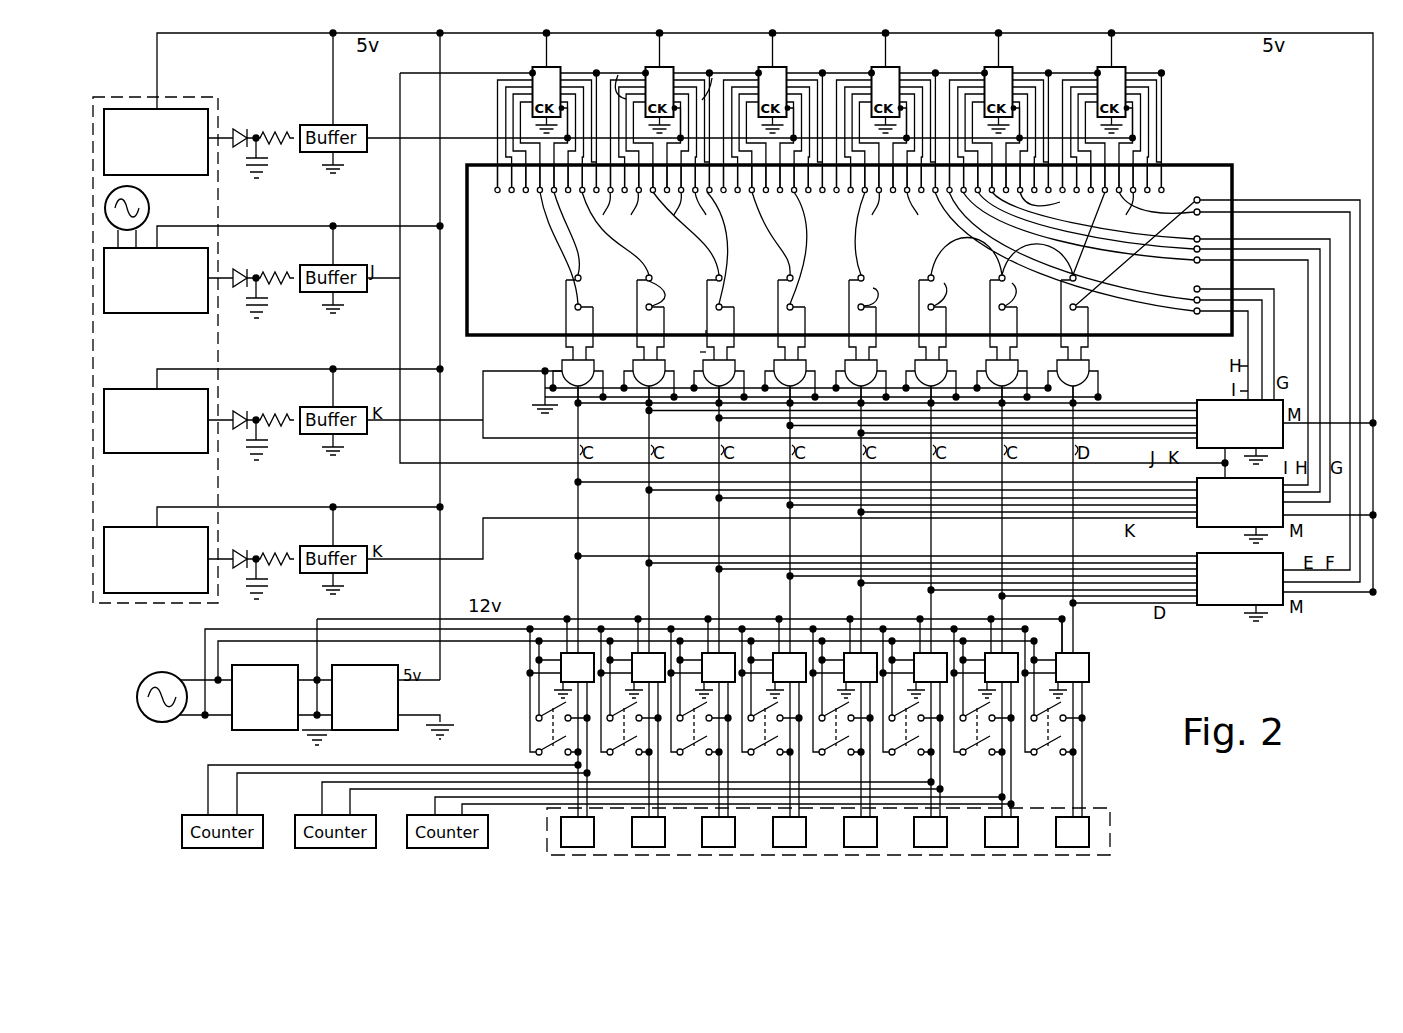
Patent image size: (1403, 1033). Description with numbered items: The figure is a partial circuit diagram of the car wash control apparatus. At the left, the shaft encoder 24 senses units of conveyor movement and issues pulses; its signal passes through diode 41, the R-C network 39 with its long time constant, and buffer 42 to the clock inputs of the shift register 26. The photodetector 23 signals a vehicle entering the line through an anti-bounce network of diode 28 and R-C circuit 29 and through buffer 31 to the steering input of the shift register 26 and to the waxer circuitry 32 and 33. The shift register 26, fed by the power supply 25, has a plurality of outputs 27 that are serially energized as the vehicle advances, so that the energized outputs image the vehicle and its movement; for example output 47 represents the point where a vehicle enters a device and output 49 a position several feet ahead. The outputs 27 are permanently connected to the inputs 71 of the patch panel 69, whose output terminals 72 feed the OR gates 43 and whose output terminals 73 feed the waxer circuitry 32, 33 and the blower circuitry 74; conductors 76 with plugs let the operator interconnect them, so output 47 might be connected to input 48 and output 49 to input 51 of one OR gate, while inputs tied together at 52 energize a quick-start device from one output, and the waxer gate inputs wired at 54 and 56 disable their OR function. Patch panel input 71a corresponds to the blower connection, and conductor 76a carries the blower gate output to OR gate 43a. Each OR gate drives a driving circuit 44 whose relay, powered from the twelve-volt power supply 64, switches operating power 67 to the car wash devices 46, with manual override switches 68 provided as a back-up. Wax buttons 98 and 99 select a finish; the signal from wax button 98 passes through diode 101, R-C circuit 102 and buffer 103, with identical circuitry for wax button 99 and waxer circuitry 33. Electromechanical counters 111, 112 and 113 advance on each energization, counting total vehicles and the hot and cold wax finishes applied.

The shaft encoder 24 is at (165, 103).
The photodetector 23 is at (146, 318).
The diode 41 is at (250, 124).
The R-C network 39 is at (270, 152).
The buffer 42 is at (351, 158).
The diode 28 is at (245, 249).
The R-C circuit 29 is at (268, 294).
The buffer 31 is at (351, 298).
The wax button 98 is at (134, 387).
The wax button 99 is at (134, 525).
The diode 101 is at (258, 396).
The R-C circuit 102 is at (265, 434).
The buffer 103 is at (331, 404).
The operating power 67 is at (180, 669).
The 12-volt power supply 64 is at (252, 665).
The power supply 25 is at (382, 665).
The electromechanical counter 111 is at (220, 848).
The electromechanical counter 112 is at (316, 848).
The electromechanical counter 113 is at (425, 848).
The shift register 26 is at (566, 65).
The outputs 27 is at (529, 80).
The output 49 is at (624, 75).
The output 47 is at (699, 75).
The patch panel 69 is at (838, 250).
The inputs 71 is at (868, 209).
The patch panel input 71a is at (1049, 206).
The conductors 76 is at (558, 250).
The conductor 76a is at (1084, 298).
The output terminals 73 is at (1203, 222).
The output terminals 72 is at (581, 304).
The connection of OR gate inputs 52 is at (879, 293).
The wired-together OR gate inputs 54 is at (951, 306).
The wired-together OR gate inputs 56 is at (1019, 297).
The OR gate input 48 is at (732, 323).
The OR gate input 51 is at (700, 354).
The OR gates 43 is at (587, 362).
The OR gate 43a is at (1081, 362).
The driving circuitry 44 is at (624, 616).
The manual override switches 68 is at (650, 762).
The car wash devices 46 is at (591, 842).
The waxer circuitry 32 is at (1191, 384).
The waxer circuitry 33 is at (1194, 530).
The blower circuitry 74 is at (1194, 616).